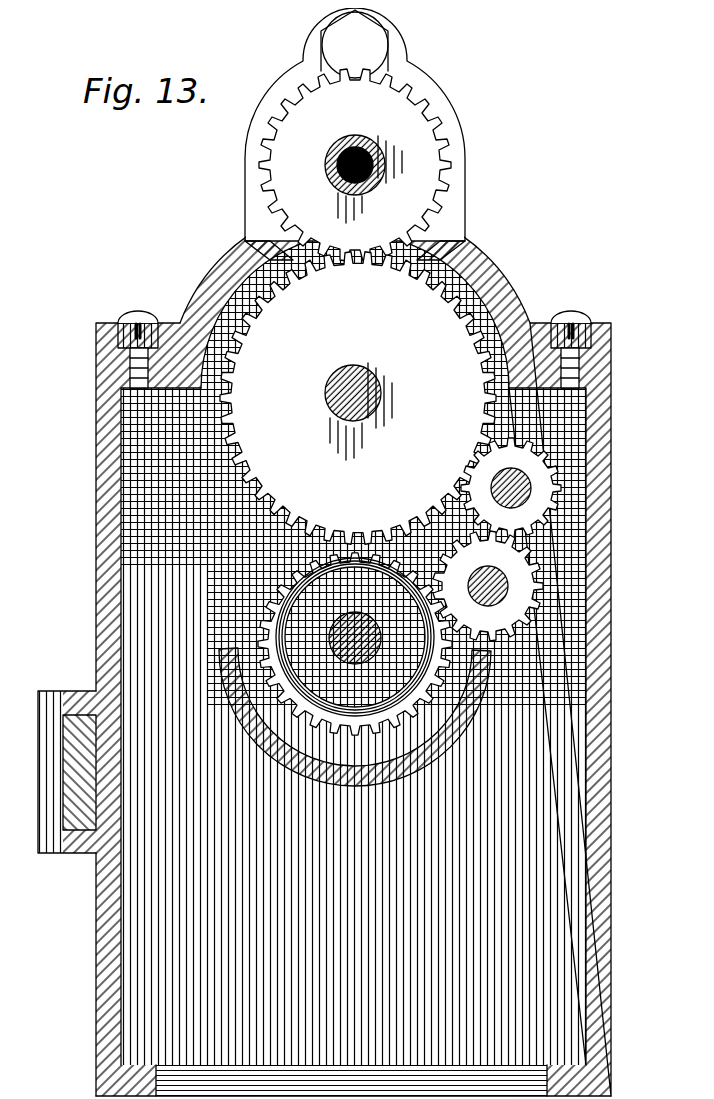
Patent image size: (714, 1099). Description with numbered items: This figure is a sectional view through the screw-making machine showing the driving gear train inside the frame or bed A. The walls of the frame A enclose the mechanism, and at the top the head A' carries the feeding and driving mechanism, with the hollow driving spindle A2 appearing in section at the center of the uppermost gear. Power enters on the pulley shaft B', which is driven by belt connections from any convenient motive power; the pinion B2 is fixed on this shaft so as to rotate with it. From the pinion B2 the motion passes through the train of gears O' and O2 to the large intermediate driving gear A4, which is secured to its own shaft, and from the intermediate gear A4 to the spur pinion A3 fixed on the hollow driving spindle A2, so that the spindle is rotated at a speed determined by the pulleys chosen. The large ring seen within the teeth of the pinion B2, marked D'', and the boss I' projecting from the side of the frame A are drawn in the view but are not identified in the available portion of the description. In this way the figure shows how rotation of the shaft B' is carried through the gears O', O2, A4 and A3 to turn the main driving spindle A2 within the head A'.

The frame or bed A is at (353, 665).
The head A' is at (389, 198).
The hollow driving spindle A2 is at (318, 163).
The spur pinion A3 is at (413, 150).
The intermediate driving gear A4 is at (358, 398).
The gear O2 is at (538, 492).
The gear O' is at (500, 607).
The pinion B2 is at (263, 602).
The shaft B' is at (352, 637).
The drum hub D'' is at (376, 638).
The side boss I' is at (103, 772).